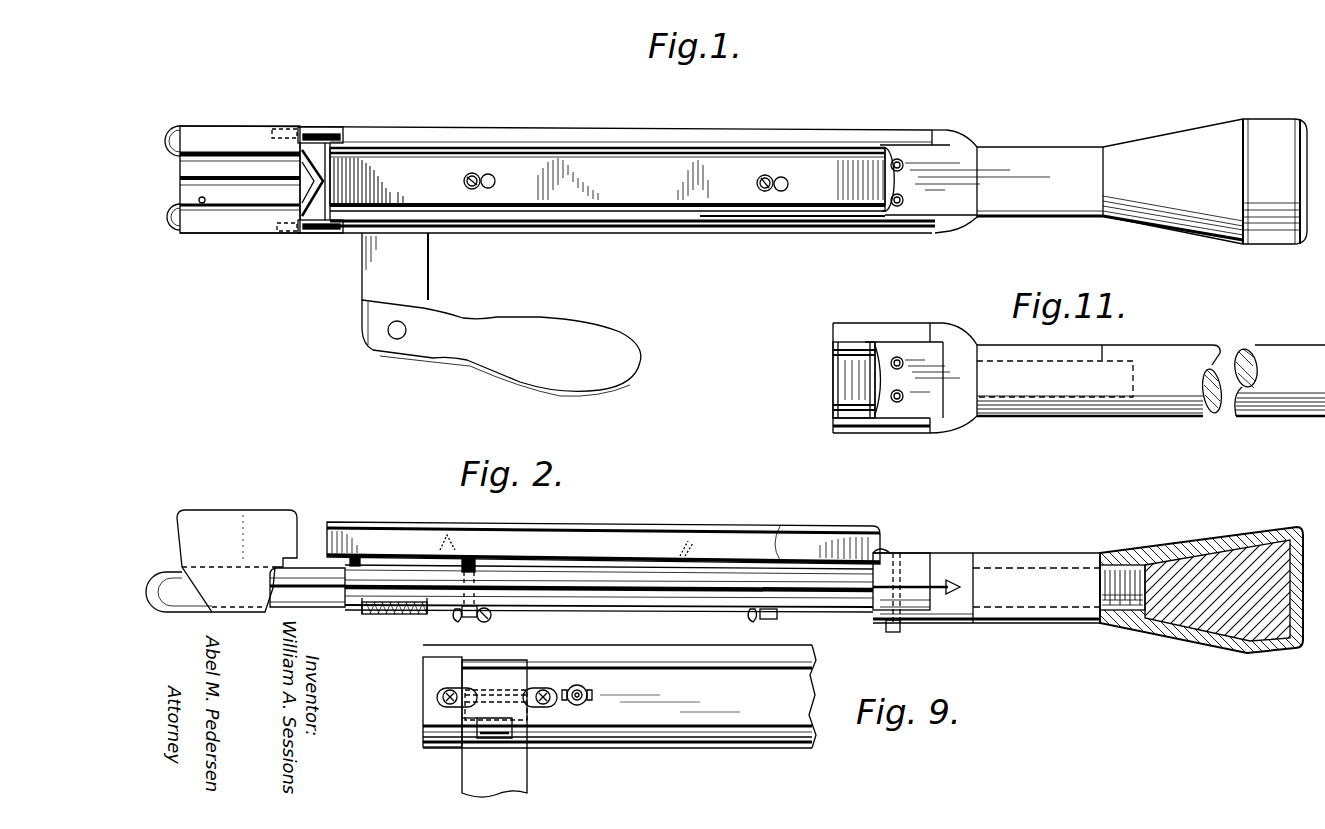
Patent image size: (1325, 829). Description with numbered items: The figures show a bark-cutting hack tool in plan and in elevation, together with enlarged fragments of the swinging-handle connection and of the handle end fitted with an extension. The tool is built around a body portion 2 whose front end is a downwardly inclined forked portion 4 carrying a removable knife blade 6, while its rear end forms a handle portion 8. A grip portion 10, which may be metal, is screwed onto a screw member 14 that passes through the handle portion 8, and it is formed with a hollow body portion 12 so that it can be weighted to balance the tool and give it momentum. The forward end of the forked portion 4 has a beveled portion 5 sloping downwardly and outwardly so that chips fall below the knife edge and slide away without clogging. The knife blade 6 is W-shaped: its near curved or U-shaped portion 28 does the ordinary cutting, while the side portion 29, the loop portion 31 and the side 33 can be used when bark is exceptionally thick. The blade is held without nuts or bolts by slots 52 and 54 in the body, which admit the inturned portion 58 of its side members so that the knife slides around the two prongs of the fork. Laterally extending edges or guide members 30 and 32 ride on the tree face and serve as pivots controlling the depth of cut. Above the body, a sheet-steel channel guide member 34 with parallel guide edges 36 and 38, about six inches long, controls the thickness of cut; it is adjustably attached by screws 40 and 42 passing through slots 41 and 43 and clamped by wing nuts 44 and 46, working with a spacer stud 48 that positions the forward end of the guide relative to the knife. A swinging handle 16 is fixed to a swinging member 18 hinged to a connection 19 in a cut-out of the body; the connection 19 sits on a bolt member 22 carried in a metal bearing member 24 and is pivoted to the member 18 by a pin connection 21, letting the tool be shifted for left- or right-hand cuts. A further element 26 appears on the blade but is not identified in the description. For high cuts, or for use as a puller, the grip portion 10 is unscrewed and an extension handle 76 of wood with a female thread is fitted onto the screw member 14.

In FIG. 1, the body portion 2 is at (768, 132).
In FIG. 11, the body portion 2 is at (908, 330).
In FIG. 2, the body portion 2 is at (607, 598).
In FIG. 9, the body portion 2 is at (770, 730).
In FIG. 2, the forked portion 4 is at (293, 597).
In FIG. 1, the beveled portion 5 is at (308, 186).
In FIG. 1, the knife blade 6 is at (192, 177).
In FIG. 2, the knife blade 6 is at (283, 525).
In FIG. 1, the handle portion 8 is at (1038, 157).
In FIG. 11, the handle portion 8 is at (1023, 412).
In FIG. 2, the handle portion 8 is at (1022, 557).
In FIG. 1, the grip portion 10 is at (1213, 137).
In FIG. 2, the hollow body portion 12 is at (1277, 630).
In FIG. 2, the screw member 14 is at (1122, 573).
In FIG. 1, the handle 16 is at (587, 337).
In FIG. 1, the swinging member 18 is at (428, 263).
In FIG. 2, the swinging member 18 is at (369, 612).
In FIG. 9, the swinging member 18 is at (473, 768).
In FIG. 2, the connection 19 is at (388, 613).
In FIG. 9, the connection 19 is at (487, 723).
In FIG. 9, the pin connection 21 is at (493, 736).
In FIG. 9, the bolt member 22 is at (480, 697).
In FIG. 9, the metal bearing member 24 is at (533, 723).
In FIG. 1, the lower barrel 26 is at (223, 217).
In FIG. 1, the curved or U-shaped portion 28 is at (242, 137).
In FIG. 1, the side portion 29 is at (203, 203).
In FIG. 1, the guide member 30 is at (563, 128).
In FIG. 11, the guide member 30 is at (867, 325).
In FIG. 9, the guide member 30 is at (643, 748).
In FIG. 1, the loop portion 31 is at (253, 182).
In FIG. 1, the guide member 32 is at (673, 232).
In FIG. 11, the guide member 32 is at (903, 432).
In FIG. 2, the guide member 32 is at (687, 592).
In FIG. 9, the guide member 32 is at (640, 647).
In FIG. 1, the side 33 is at (208, 152).
In FIG. 1, the guide member 34 is at (630, 163).
In FIG. 2, the guide member 34 is at (703, 533).
In FIG. 1, the guide edge 36 is at (703, 142).
In FIG. 1, the guide edge 38 is at (727, 218).
In FIG. 11, the guide edge 38 is at (848, 420).
In FIG. 1, the screw 40 is at (475, 173).
In FIG. 2, the screw 40 is at (470, 553).
In FIG. 1, the slot 41 is at (495, 178).
In FIG. 1, the screw 42 is at (777, 177).
In FIG. 2, the screw 42 is at (781, 558).
In FIG. 1, the slot 43 is at (789, 184).
In FIG. 2, the wing nut 44 is at (490, 618).
In FIG. 9, the wing nut 44 is at (590, 698).
In FIG. 2, the wing nut 46 is at (778, 615).
In FIG. 2, the spacer stud 48 is at (355, 562).
In FIG. 1, the slot 52 is at (326, 129).
In FIG. 1, the slot 54 is at (320, 232).
In FIG. 2, the inturned portion 58 is at (227, 597).
In FIG. 11, the extension handle 76 is at (1165, 357).